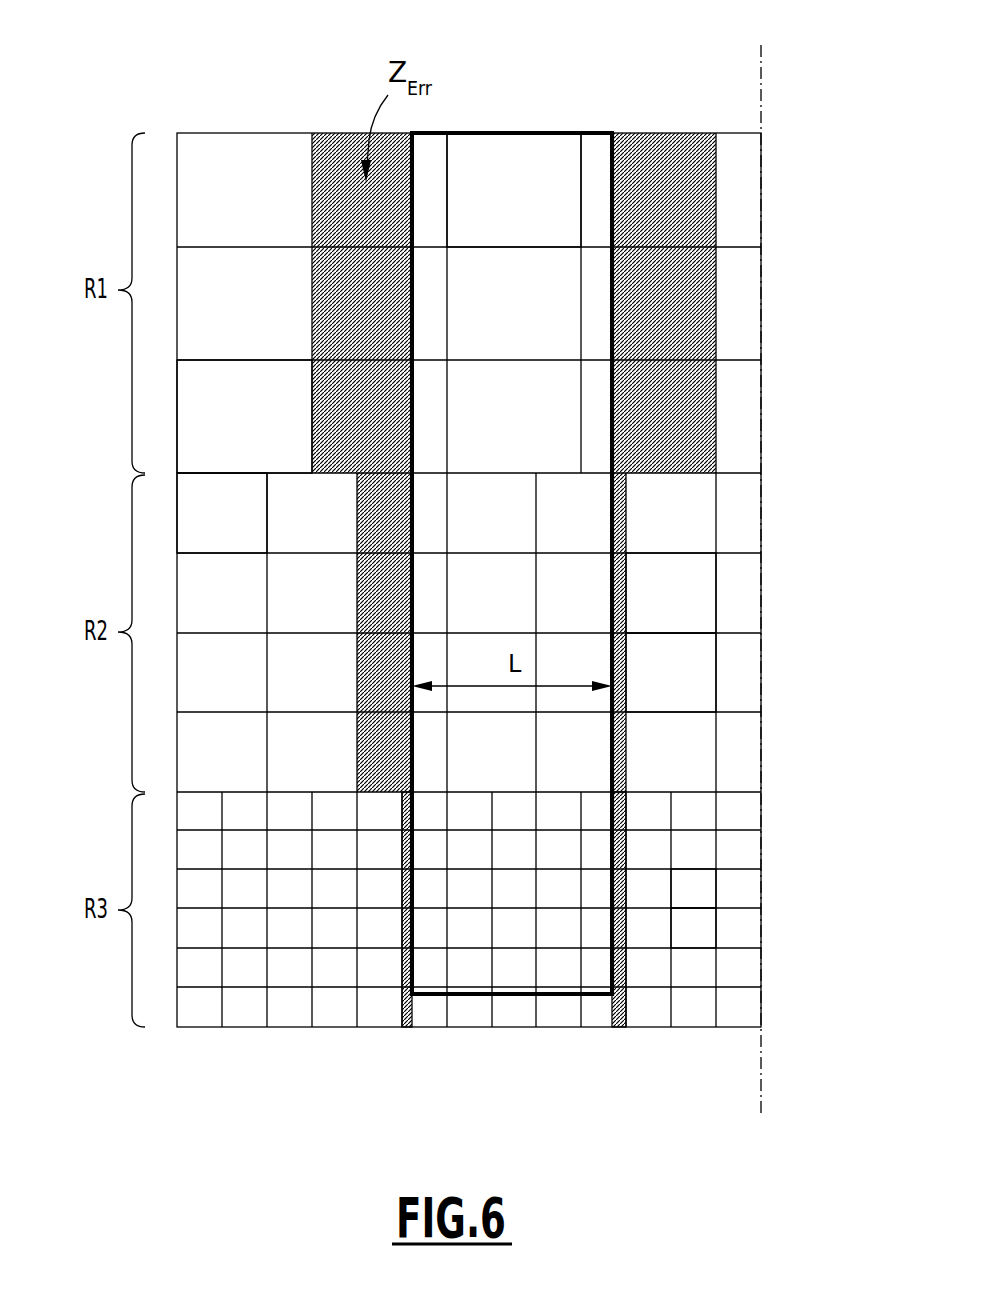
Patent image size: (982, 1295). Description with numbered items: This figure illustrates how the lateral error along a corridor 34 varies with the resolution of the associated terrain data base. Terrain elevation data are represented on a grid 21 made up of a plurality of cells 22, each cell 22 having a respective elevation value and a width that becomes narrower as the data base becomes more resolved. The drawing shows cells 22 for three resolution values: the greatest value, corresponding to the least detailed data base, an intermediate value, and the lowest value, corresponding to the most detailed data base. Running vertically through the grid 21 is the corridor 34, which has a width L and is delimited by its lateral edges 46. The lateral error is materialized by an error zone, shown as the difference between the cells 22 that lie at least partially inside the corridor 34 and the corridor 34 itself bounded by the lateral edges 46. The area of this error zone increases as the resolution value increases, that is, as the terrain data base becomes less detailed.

The grid 21 is at (258, 110).
The cell 22 is at (668, 170).
The corridor 34 is at (632, 846).
The lateral edge 46 is at (415, 973).